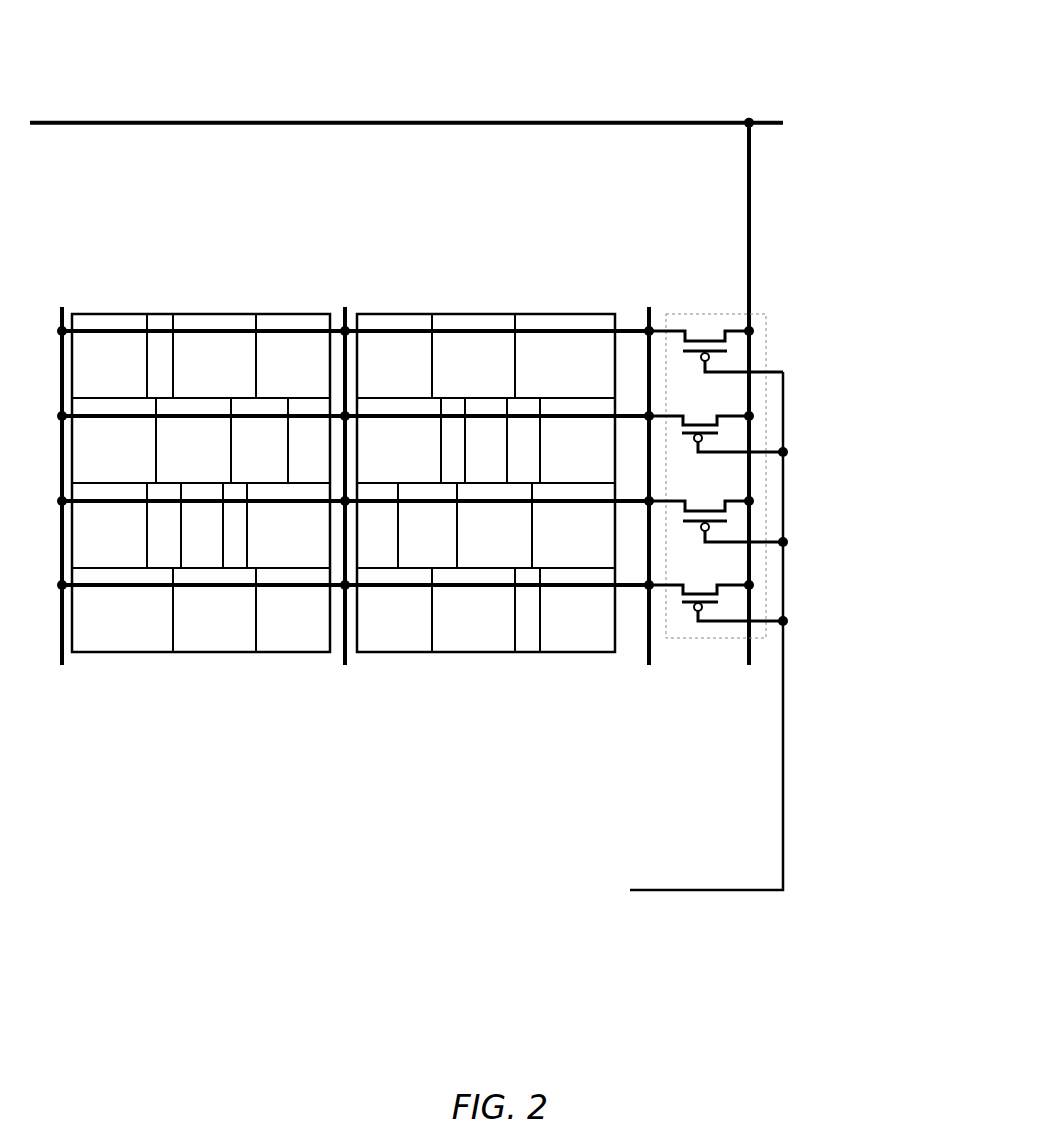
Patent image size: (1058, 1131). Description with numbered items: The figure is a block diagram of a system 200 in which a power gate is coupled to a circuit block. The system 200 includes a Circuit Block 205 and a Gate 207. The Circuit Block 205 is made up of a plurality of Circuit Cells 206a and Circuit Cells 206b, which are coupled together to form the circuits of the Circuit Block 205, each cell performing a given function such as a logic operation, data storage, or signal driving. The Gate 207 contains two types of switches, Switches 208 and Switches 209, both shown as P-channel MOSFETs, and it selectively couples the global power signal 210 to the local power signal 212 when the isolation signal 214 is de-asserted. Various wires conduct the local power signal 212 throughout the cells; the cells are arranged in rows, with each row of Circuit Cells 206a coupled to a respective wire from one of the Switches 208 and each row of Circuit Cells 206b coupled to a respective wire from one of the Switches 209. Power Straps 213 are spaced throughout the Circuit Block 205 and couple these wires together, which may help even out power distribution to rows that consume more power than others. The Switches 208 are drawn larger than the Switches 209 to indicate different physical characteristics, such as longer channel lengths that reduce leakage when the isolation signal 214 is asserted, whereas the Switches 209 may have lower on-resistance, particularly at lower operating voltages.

The system 200 is at (148, 46).
The circuit block 205 is at (627, 315).
The circuit cells 206a is at (428, 523).
The circuit cells 206b is at (189, 440).
The gate 207 is at (767, 338).
The switches 208 is at (727, 351).
The switches 209 is at (730, 605).
The global power signal 210 is at (669, 116).
The local power signal 212 is at (663, 301).
The power straps 213 is at (649, 667).
The isolation signal 214 is at (617, 898).